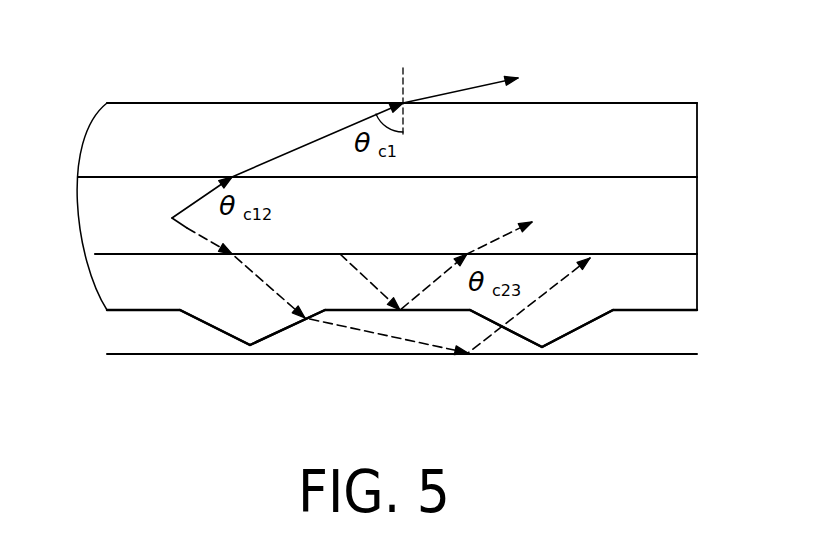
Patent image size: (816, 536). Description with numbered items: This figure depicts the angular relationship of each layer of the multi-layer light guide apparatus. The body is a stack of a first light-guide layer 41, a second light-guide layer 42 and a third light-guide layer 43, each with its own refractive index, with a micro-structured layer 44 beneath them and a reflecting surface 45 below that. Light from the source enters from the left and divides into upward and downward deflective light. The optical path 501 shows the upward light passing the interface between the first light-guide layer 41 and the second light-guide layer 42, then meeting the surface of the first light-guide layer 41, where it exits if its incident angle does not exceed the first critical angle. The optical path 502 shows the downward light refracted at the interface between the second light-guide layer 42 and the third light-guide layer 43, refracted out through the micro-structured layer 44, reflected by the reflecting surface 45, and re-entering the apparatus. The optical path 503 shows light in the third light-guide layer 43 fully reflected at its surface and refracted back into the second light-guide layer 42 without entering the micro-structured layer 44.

The first light-guide layer 41 is at (690, 145).
The second light-guide layer 42 is at (690, 220).
The third light-guide layer 43 is at (690, 285).
The micro-structured layer 44 is at (568, 325).
The reflecting surface 45 is at (662, 357).
The optical path 501 is at (192, 200).
The optical path 502 is at (187, 229).
The optical path 503 is at (363, 277).